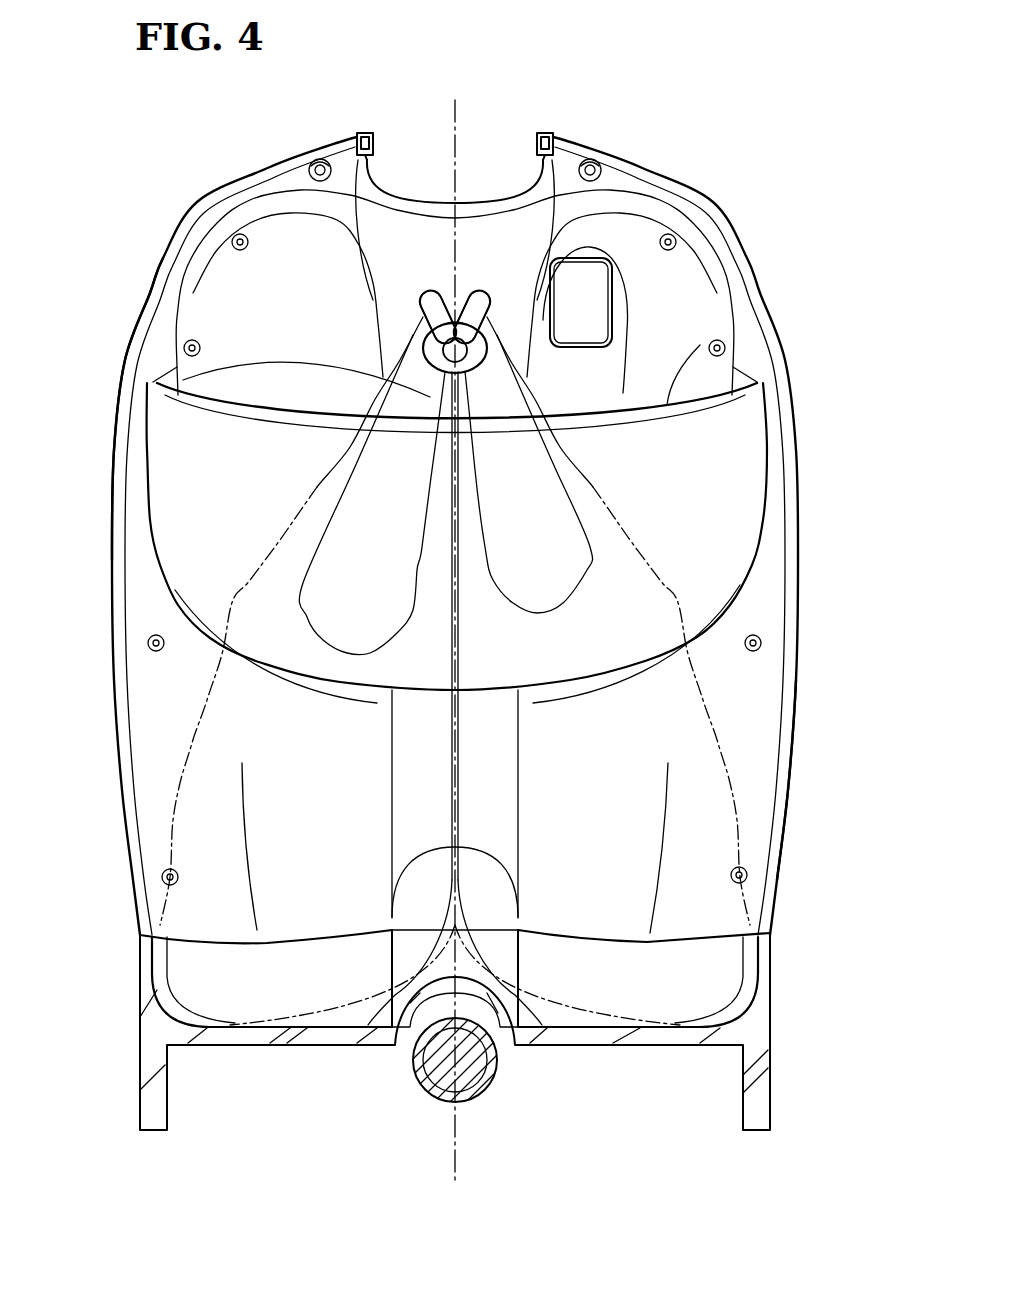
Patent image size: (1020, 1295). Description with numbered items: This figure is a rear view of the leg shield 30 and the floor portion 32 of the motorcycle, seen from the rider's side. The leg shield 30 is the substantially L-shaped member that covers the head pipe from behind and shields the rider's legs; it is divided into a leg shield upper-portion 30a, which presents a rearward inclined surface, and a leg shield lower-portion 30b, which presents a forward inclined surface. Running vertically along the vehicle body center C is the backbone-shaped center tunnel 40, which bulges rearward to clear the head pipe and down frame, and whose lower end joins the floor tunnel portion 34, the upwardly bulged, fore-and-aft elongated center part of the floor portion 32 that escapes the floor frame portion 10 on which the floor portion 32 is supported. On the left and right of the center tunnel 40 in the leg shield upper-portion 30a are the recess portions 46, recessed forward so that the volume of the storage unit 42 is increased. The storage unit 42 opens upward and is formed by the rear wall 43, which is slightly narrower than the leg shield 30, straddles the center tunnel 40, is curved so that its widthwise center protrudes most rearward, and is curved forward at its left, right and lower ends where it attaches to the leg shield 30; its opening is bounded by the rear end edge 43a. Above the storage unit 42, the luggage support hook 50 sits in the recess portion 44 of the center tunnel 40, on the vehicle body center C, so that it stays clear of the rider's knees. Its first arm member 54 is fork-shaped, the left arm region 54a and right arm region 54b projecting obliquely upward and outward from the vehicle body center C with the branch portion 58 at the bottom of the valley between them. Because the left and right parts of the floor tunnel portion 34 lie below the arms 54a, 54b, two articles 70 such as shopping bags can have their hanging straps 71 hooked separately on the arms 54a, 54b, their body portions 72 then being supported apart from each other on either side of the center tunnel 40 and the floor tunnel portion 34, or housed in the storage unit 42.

The floor frame portion 10 is at (497, 1070).
The leg shield 30 is at (147, 262).
The leg shield upper-portion 30a is at (140, 298).
The leg shield lower-portion 30b is at (783, 700).
The floor portion 32 is at (290, 997).
The floor tunnel portion 34 is at (360, 1030).
The center tunnel 40 is at (470, 240).
The storage unit 42 is at (680, 585).
The rear wall 43 is at (727, 460).
The rear end edge 43a is at (700, 345).
The recess portion 44 is at (157, 380).
The recess portions 46 is at (260, 298).
The luggage support hook 50 is at (410, 290).
The first arm member 54 is at (505, 325).
The left arm region 54a is at (420, 290).
The right arm region 54b is at (500, 300).
The branch portion 58 is at (453, 305).
The article to be hung 70 is at (257, 617).
The hanging strap 71 is at (320, 493).
The body portion 72 is at (185, 830).
The vehicle body center C is at (456, 630).